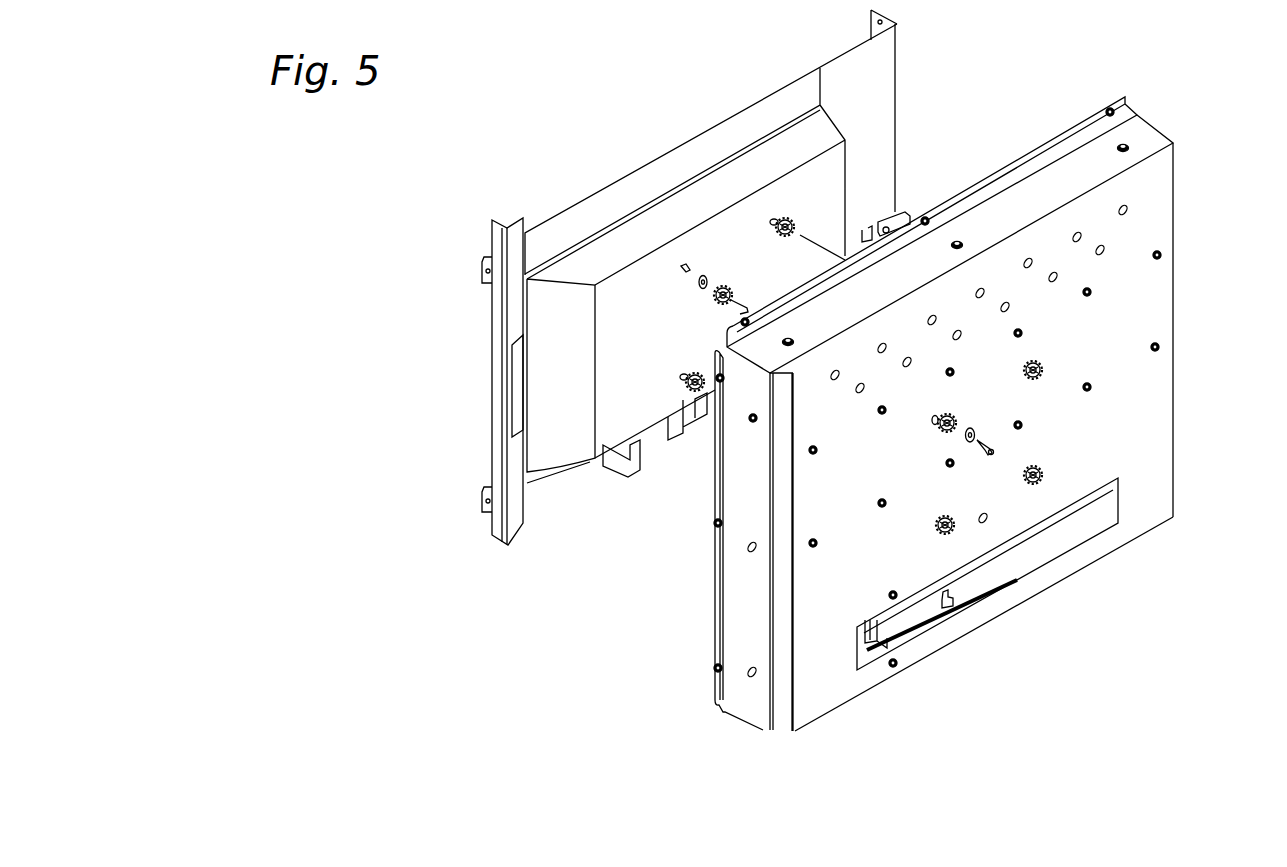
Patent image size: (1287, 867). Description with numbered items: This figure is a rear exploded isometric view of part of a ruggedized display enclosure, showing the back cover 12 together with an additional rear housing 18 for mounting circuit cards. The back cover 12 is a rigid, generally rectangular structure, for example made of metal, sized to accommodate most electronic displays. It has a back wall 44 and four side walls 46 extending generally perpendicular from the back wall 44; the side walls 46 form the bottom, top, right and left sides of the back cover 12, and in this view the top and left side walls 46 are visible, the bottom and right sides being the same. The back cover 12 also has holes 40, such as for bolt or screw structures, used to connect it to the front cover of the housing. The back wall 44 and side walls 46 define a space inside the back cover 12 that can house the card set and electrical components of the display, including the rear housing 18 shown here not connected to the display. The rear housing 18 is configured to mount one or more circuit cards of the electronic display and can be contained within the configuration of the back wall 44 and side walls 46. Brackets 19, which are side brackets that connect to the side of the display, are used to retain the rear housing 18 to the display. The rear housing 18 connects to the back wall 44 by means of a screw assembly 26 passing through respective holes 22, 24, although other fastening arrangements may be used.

The back cover 12 is at (947, 396).
The rear housing 18 is at (741, 246).
The brackets 19 is at (498, 322).
The holes 22 is at (933, 420).
The holes 24 is at (688, 267).
The screw assembly 26 is at (1007, 453).
The holes 40 is at (1110, 100).
The back wall 44 is at (1147, 292).
The side walls 46 is at (1077, 173).